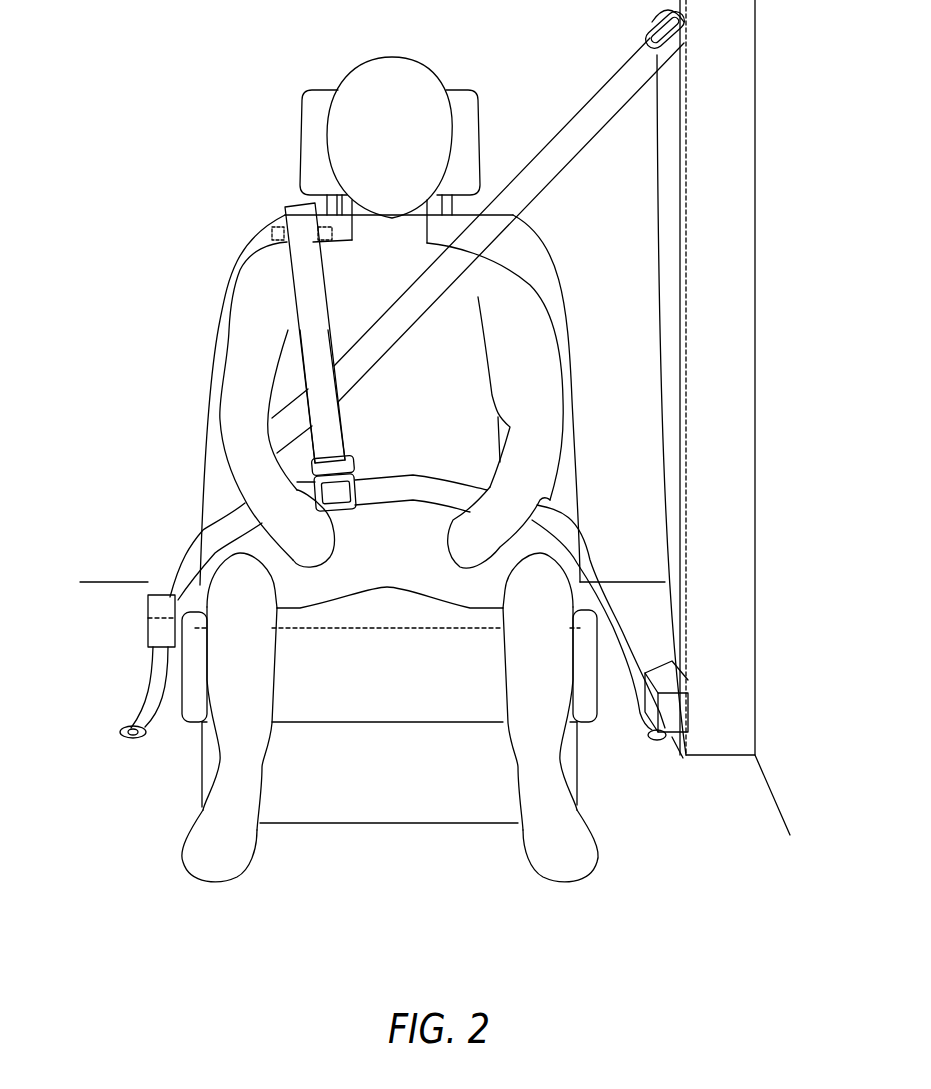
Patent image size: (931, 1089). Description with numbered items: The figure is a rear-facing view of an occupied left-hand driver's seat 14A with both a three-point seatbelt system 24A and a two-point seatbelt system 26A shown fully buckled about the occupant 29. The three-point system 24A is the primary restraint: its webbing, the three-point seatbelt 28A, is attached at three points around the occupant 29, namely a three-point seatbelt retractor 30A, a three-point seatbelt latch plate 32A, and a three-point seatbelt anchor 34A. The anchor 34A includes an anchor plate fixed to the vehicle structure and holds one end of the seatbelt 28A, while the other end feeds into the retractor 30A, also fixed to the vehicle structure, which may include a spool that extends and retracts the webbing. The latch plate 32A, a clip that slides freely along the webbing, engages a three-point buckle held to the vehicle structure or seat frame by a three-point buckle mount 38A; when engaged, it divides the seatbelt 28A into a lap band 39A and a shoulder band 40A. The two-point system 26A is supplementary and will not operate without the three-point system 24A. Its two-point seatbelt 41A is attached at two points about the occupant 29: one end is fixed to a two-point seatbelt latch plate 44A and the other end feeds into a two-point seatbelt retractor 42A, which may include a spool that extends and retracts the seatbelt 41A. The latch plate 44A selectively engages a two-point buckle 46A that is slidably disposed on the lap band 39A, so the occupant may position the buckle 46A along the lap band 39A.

The driver's seat 14A is at (470, 210).
The three-point seatbelt system 24A is at (606, 68).
The two-point seatbelt system 26A is at (283, 277).
The three-point seatbelt 28A is at (684, 212).
The occupant 29 is at (217, 398).
The three-point seatbelt retractor 30A is at (689, 705).
The three-point seatbelt latch plate 32A is at (163, 597).
The three-point seatbelt anchor 34A is at (657, 738).
The three-point buckle mount 38A is at (130, 729).
The lap band 39A is at (457, 480).
The shoulder band 40A is at (563, 147).
The two-point seatbelt 41A is at (335, 328).
The two-point seatbelt retractor 42A is at (270, 230).
The two-point seatbelt latch plate 44A is at (356, 462).
The two-point buckle 46A is at (348, 511).